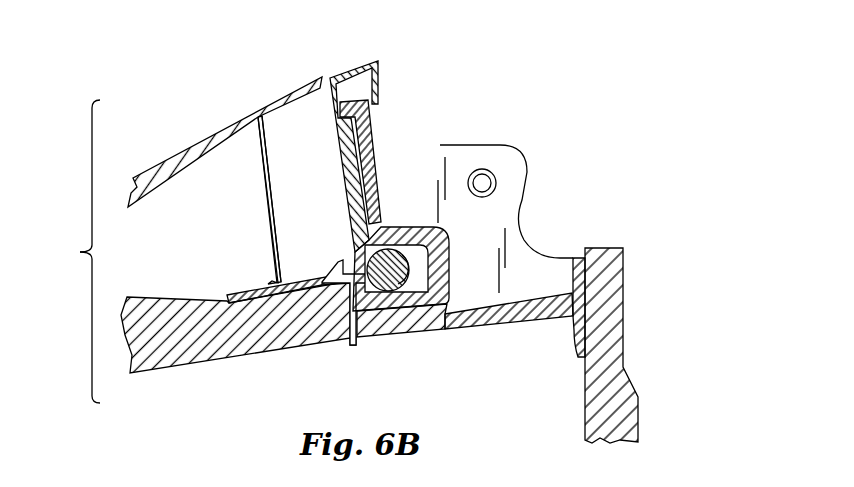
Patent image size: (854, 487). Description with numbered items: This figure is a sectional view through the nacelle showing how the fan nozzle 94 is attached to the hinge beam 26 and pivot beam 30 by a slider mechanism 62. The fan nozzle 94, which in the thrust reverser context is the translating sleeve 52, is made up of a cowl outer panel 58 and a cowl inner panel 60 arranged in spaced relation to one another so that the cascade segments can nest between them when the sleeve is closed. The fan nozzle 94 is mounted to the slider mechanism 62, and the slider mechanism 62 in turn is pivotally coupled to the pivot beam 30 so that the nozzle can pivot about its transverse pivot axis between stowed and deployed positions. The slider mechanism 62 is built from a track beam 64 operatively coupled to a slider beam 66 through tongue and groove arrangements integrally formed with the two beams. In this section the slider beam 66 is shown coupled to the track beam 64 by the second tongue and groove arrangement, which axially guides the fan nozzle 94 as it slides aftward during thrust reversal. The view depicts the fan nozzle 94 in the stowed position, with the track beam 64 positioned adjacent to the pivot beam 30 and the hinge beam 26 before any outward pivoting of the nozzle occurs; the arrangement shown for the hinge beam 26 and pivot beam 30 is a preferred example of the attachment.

The hinge beam 26 is at (367, 140).
The pivot beam 30 is at (360, 162).
The translating sleeve 52 is at (75, 182).
The fan nozzle 94 is at (76, 327).
The cowl outer panel 58 is at (198, 142).
The cowl inner panel 60 is at (208, 365).
The slider mechanism 62 is at (397, 232).
The track beam 64 is at (423, 287).
The slider beam 66 is at (333, 290).